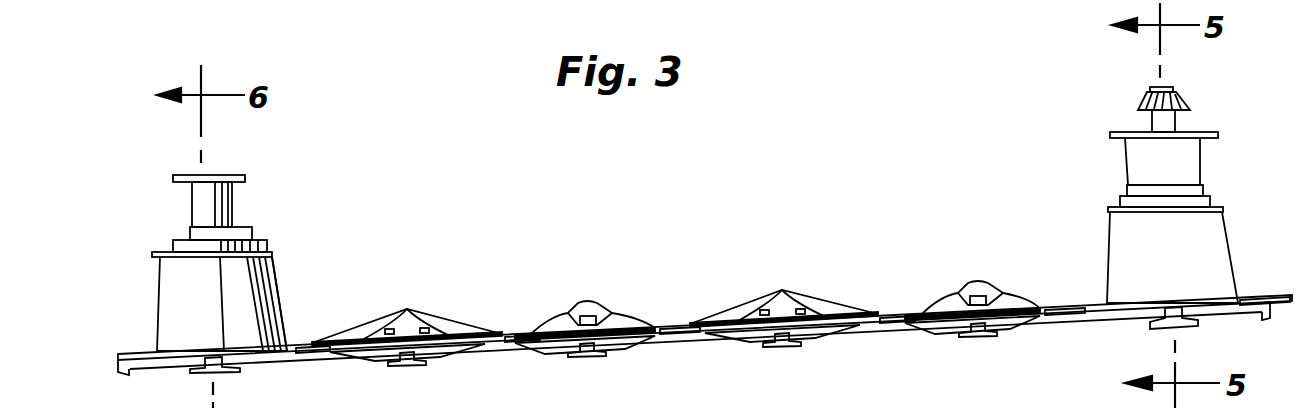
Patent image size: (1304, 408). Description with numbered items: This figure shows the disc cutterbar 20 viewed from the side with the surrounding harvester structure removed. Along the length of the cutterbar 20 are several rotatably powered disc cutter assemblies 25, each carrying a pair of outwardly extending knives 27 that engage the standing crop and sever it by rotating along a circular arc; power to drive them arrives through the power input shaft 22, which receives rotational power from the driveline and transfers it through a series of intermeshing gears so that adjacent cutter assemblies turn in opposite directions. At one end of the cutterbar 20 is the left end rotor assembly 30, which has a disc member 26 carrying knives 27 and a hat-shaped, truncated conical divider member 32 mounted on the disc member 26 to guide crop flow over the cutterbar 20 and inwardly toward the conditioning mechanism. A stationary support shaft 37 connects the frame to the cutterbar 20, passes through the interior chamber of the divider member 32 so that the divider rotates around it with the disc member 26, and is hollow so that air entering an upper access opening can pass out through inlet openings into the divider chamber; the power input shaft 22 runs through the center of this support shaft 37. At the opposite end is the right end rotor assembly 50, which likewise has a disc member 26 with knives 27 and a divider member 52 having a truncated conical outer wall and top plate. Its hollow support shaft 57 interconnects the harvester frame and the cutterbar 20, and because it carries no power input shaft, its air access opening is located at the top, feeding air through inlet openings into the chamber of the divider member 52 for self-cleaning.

The disc cutterbar 20 is at (727, 195).
The power input shaft 22 is at (1140, 104).
The disc cutter assemblies 25 is at (413, 298).
The disc member 26 is at (758, 310).
The knives 27 is at (510, 330).
The left end rotor assembly 30 is at (1230, 158).
The divider member 32 is at (1108, 245).
The support shaft 37 is at (1127, 163).
The right end rotor assembly 50 is at (255, 198).
The divider member 52 is at (272, 280).
The hollow support shaft 57 is at (192, 205).